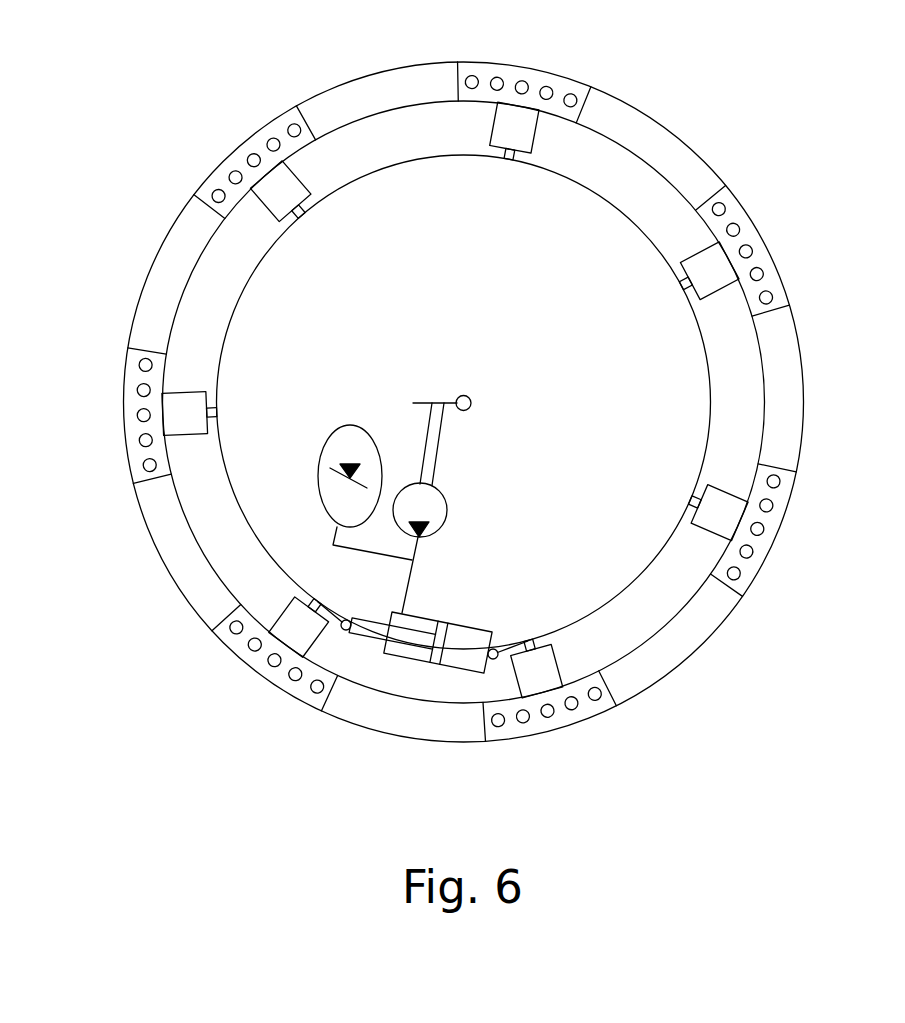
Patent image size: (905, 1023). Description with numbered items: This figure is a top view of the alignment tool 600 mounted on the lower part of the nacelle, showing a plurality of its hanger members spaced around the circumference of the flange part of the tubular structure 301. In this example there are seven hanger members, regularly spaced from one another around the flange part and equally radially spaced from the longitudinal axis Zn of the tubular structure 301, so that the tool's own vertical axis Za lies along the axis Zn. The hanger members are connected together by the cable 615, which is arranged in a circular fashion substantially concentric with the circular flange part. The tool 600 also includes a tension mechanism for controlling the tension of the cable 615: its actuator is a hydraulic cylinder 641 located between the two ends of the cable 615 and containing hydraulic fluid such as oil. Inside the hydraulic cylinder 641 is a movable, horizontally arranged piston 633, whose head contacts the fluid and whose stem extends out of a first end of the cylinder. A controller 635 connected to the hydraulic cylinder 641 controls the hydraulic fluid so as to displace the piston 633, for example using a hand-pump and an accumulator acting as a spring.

The tubular structure 301 is at (240, 134).
The alignment tool 600 is at (312, 172).
The cable 615 is at (233, 302).
The piston 633 is at (378, 632).
The controller 635 is at (403, 389).
The hydraulic cylinder 641 is at (406, 714).